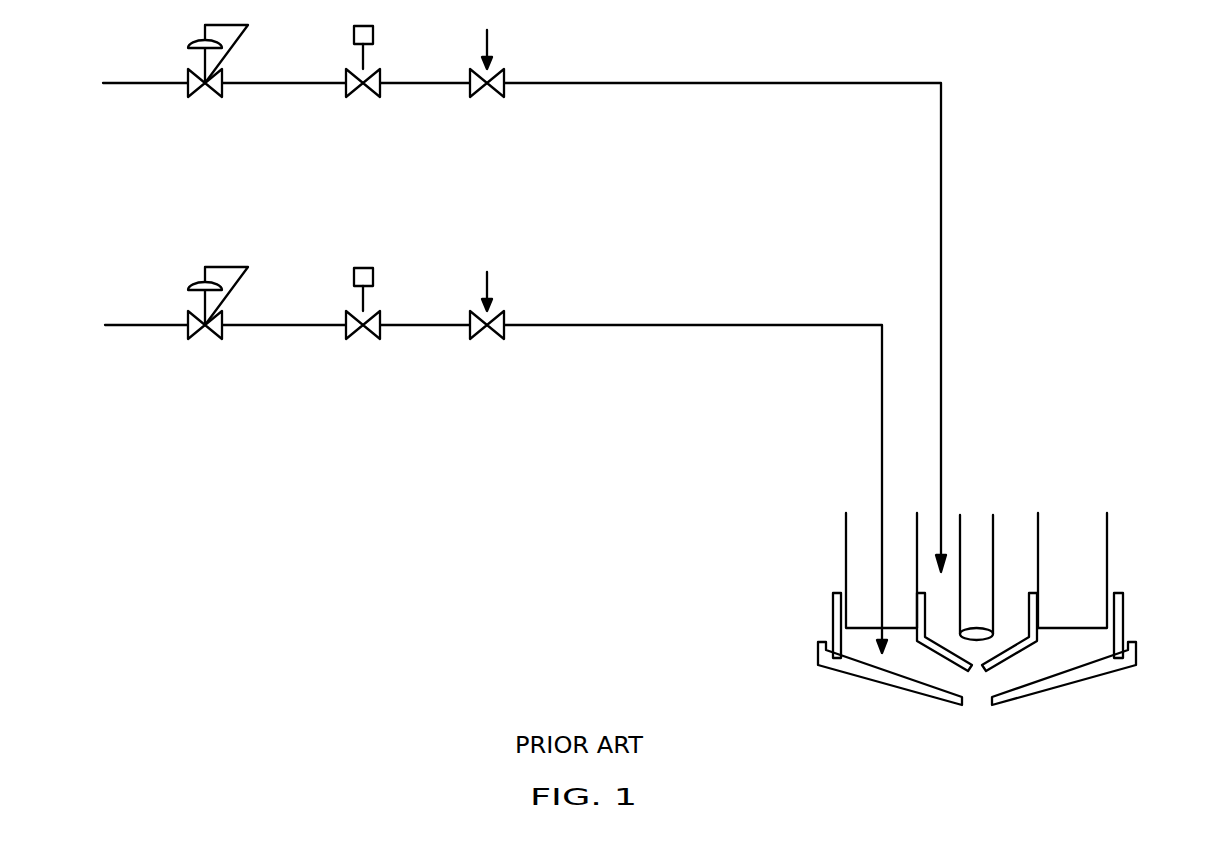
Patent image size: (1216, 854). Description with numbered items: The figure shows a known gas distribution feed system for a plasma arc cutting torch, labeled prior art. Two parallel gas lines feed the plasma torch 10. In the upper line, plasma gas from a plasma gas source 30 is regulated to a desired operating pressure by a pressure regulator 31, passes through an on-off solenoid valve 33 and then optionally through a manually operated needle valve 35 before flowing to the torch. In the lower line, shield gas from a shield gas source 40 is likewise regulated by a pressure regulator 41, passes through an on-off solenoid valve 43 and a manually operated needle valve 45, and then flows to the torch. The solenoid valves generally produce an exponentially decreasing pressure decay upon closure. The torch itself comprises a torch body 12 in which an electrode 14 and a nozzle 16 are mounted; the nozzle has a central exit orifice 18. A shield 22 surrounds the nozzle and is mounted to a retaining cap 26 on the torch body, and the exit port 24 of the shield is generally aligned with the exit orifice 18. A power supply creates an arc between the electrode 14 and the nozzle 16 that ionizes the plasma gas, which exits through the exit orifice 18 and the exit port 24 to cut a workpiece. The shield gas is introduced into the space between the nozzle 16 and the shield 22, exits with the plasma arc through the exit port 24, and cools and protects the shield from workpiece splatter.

The plasma torch 10 is at (1141, 447).
The torch body 12 is at (878, 591).
The electrode 14 is at (991, 591).
The nozzle 16 is at (1027, 653).
The exit orifice 18 is at (977, 677).
The shield 22 is at (882, 687).
The exit port 24 is at (975, 708).
The retaining cap 26 is at (1125, 603).
The plasma gas source 30 is at (509, 321).
The pressure regulator 31 is at (215, 74).
The on-off solenoid valve 33 is at (379, 73).
The manually operated needle valve 35 is at (503, 73).
The shield gas source 40 is at (480, 482).
The pressure regulator 41 is at (215, 316).
The on-off solenoid valve 43 is at (379, 315).
The manually operated needle valve 45 is at (503, 315).